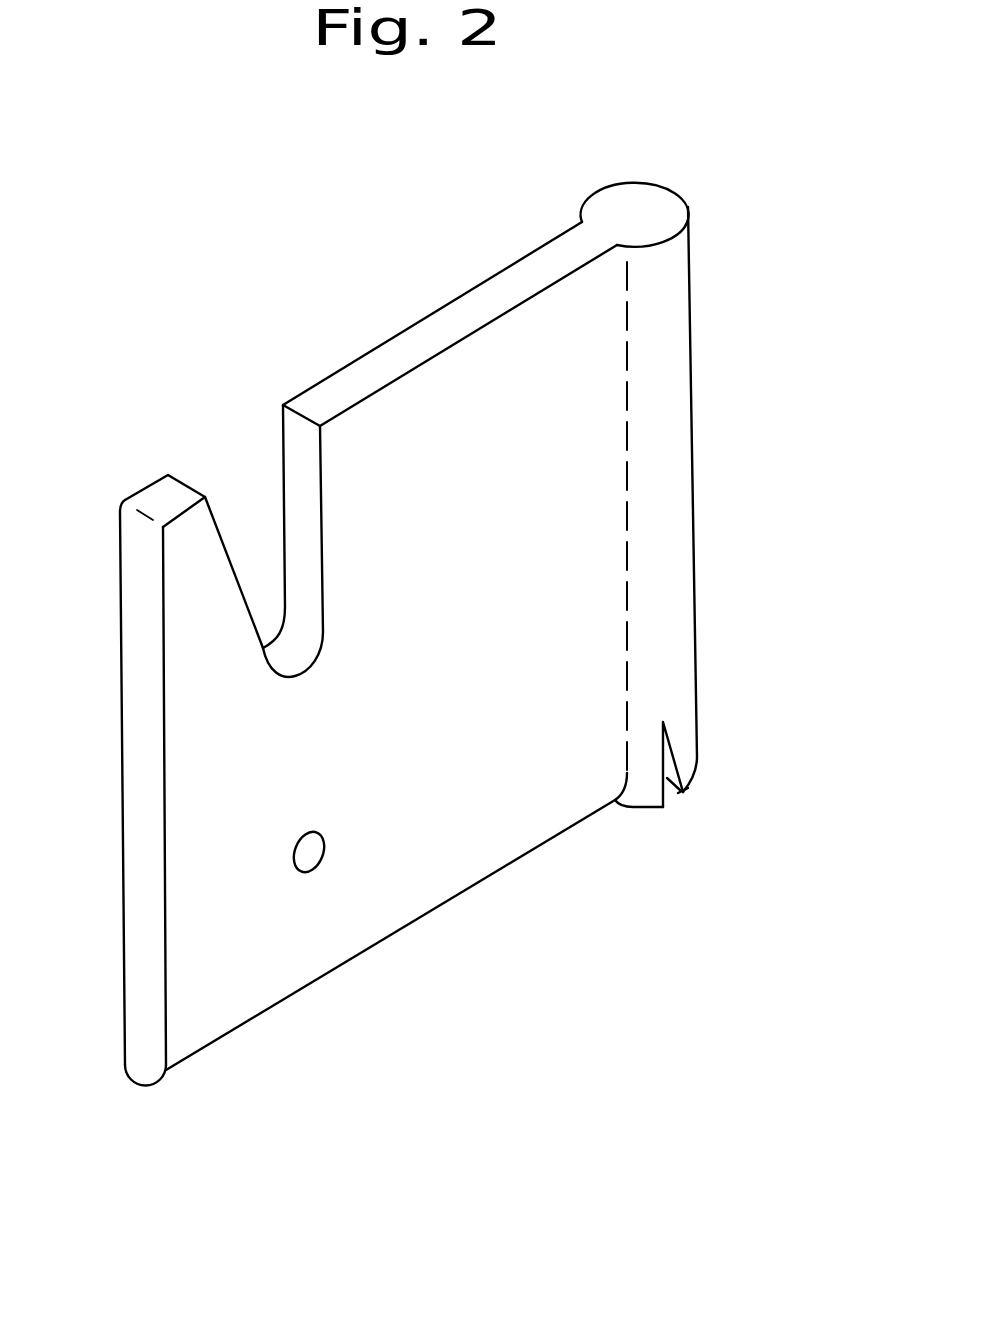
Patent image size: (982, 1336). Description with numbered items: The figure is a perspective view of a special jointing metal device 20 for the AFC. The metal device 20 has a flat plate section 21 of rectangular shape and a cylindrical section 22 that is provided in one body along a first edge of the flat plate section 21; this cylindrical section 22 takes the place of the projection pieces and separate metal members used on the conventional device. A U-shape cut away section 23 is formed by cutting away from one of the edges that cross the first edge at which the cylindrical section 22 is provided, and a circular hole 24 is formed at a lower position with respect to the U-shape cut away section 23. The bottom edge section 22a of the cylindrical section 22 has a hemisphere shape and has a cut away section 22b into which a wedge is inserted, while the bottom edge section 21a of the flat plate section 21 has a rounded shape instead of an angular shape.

The metal device 20 is at (407, 323).
The flat plate section 21 is at (466, 838).
The bottom edge section of the flat plate section 21a is at (245, 1028).
The cylindrical section 22 is at (660, 515).
The bottom edge section of the cylindrical section 22a is at (692, 761).
The cut away section 22b is at (688, 789).
The U-shape cut away section 23 is at (260, 563).
The circular hole 24 is at (308, 857).